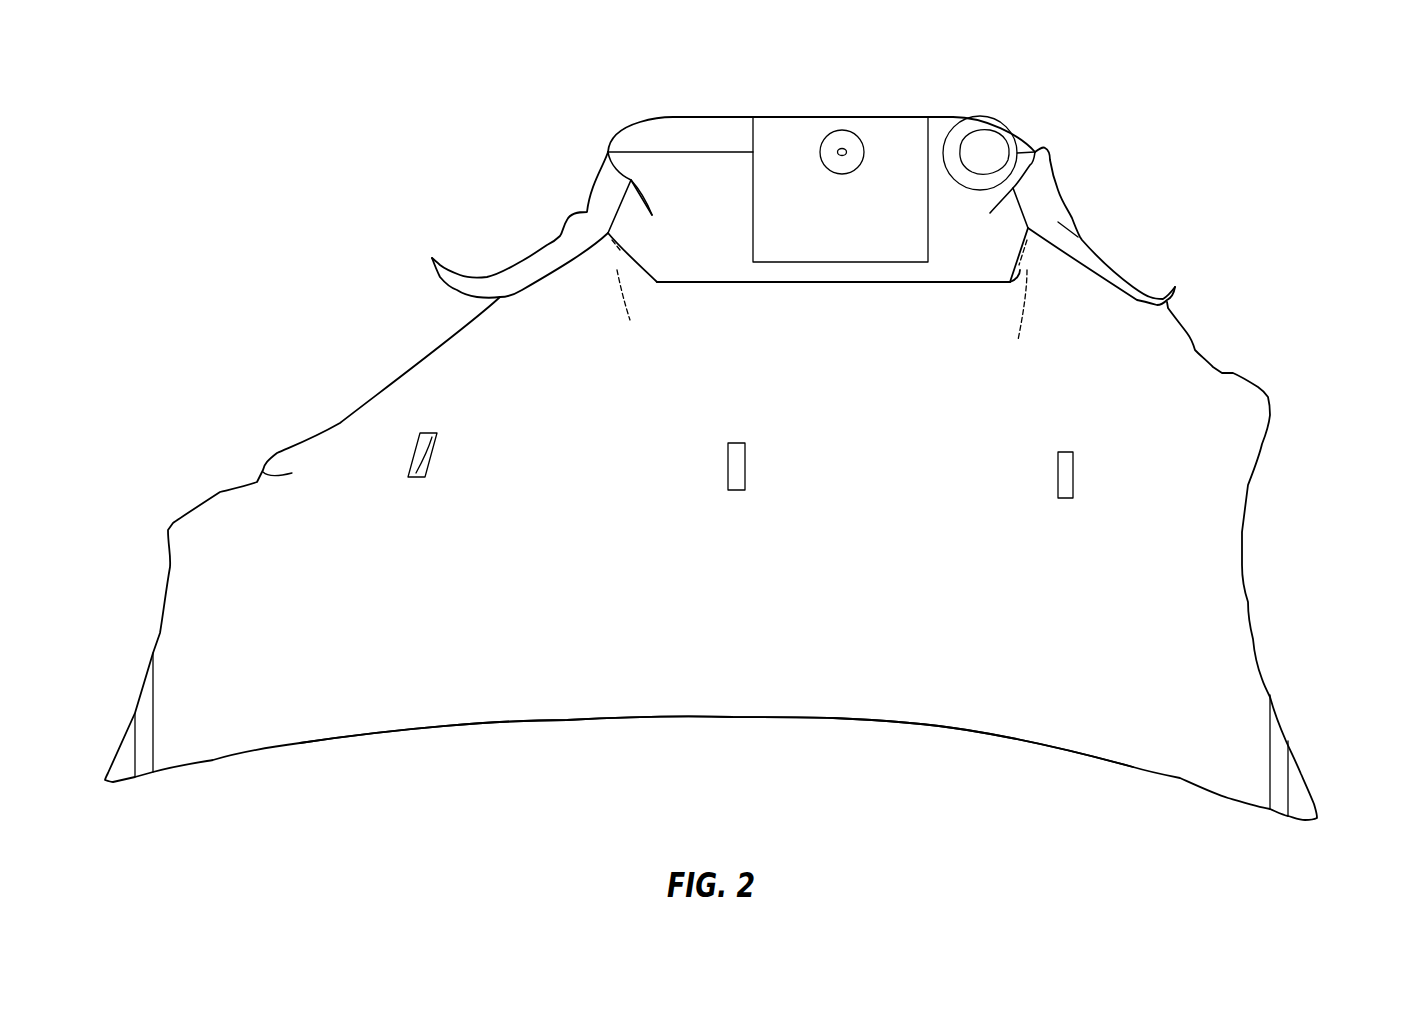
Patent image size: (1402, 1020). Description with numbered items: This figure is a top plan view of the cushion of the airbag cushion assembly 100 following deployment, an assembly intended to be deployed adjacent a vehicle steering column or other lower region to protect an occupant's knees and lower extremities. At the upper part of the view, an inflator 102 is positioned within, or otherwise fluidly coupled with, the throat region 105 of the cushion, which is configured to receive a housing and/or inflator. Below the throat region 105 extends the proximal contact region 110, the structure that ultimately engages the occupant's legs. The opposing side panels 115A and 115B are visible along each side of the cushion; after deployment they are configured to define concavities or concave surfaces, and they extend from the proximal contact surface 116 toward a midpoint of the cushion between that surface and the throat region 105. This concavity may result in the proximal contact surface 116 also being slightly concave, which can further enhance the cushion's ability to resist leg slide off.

The airbag cushion assembly 100 is at (1238, 102).
The inflator 102 is at (858, 145).
The throat region 105 is at (1108, 225).
The proximal contact region 110 is at (1282, 380).
The side panel 115A is at (1250, 602).
The side panel 115B is at (157, 637).
The proximal contact surface 116 is at (858, 722).